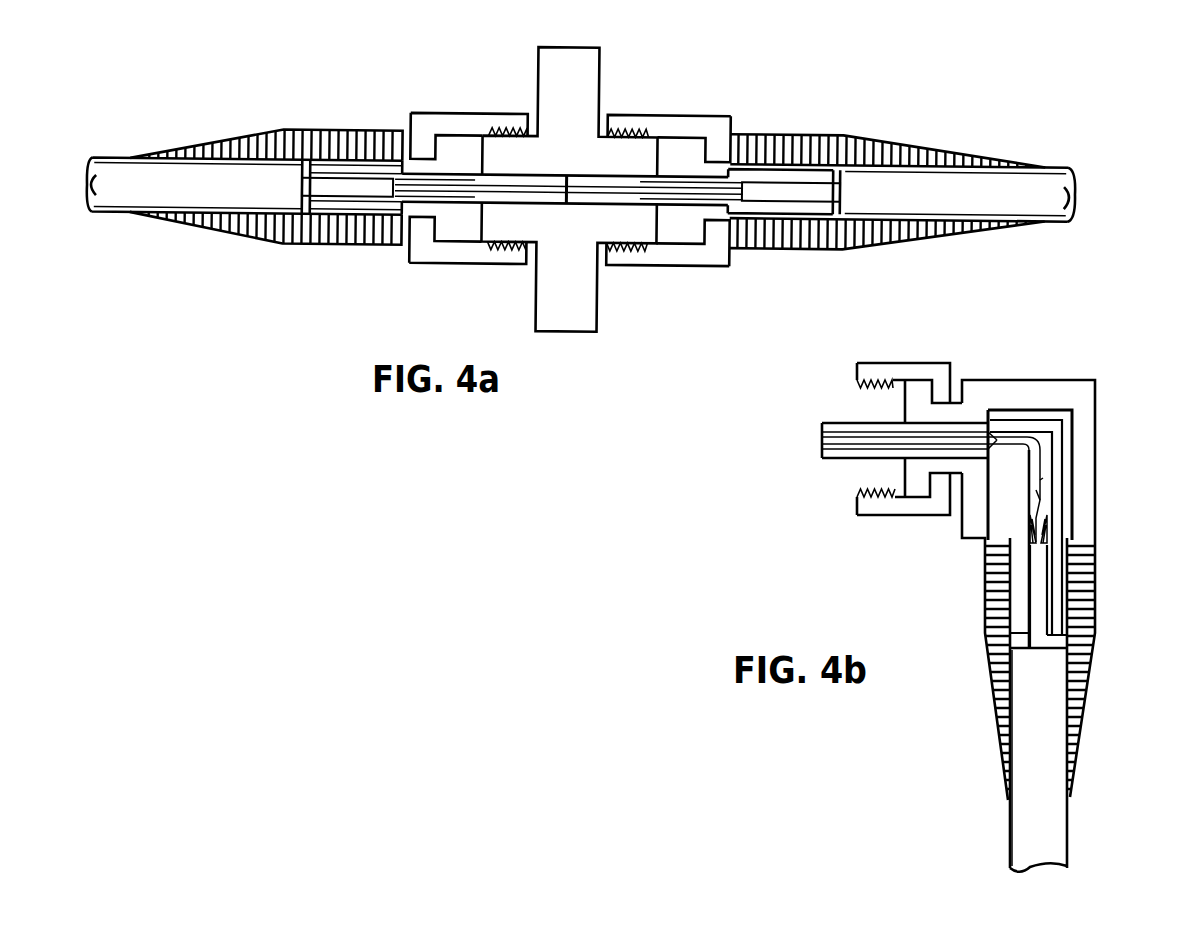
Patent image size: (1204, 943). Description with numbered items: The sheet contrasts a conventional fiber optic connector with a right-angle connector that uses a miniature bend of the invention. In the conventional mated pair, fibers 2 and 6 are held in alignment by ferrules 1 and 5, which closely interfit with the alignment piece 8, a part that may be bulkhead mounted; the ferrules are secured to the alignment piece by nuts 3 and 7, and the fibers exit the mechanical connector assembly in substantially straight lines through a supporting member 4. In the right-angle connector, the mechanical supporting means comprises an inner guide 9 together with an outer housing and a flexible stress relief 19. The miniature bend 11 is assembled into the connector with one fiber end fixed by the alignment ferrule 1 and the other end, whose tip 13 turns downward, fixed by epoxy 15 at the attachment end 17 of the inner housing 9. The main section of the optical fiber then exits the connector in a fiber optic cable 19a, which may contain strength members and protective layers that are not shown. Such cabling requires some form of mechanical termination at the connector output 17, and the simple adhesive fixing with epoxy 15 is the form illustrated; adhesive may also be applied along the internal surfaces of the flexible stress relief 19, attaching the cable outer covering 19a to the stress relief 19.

In FIG. 4a, the ferrule 1 is at (727, 182).
In FIG. 4b, the ferrule 1 is at (832, 428).
In FIG. 4a, the fiber 2 is at (627, 190).
In FIG. 4b, the fiber 2 is at (833, 447).
In FIG. 4a, the nut 3 is at (667, 127).
In FIG. 4b, the nut 3 is at (935, 378).
In FIG. 4a, the supporting member 4 is at (908, 158).
In FIG. 4a, the ferrule 5 is at (427, 180).
In FIG. 4a, the fiber 6 is at (478, 190).
In FIG. 4a, the nut 7 is at (465, 125).
In FIG. 4a, the alignment piece 8 is at (577, 50).
In FIG. 4b, the inner guide 9 is at (1035, 422).
In FIG. 4b, the miniature bend 11 is at (1040, 445).
In FIG. 4b, the capillary tip 13 is at (1043, 478).
In FIG. 4b, the epoxy 15 is at (1050, 525).
In FIG. 4b, the attachment end 17 is at (1055, 630).
In FIG. 4b, the flexible stress relief 19 is at (1085, 648).
In FIG. 4b, the fiber optic cable 19a is at (1053, 683).